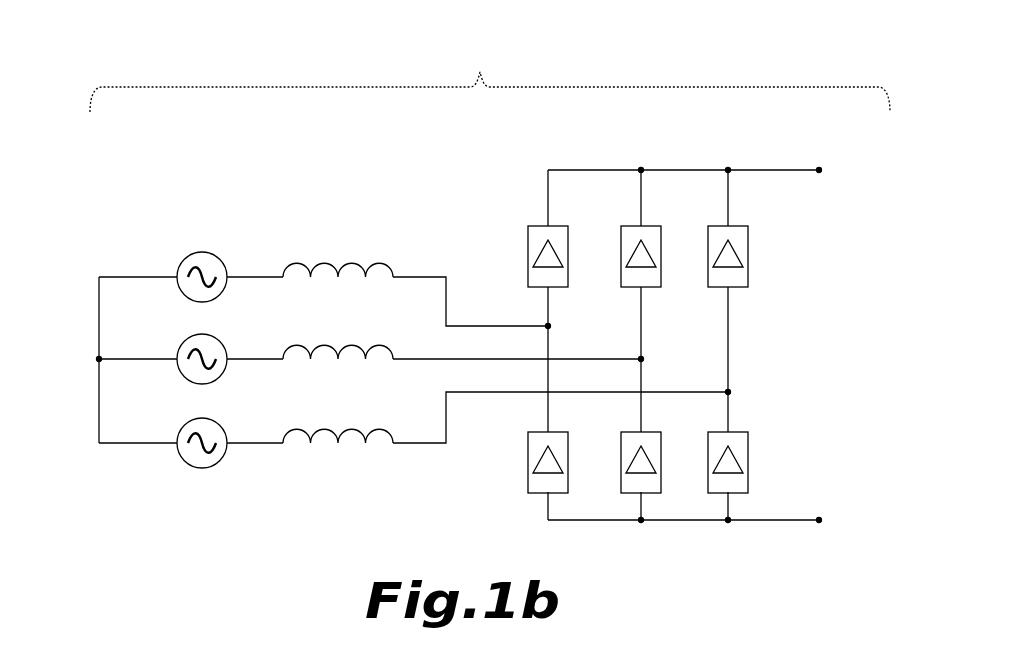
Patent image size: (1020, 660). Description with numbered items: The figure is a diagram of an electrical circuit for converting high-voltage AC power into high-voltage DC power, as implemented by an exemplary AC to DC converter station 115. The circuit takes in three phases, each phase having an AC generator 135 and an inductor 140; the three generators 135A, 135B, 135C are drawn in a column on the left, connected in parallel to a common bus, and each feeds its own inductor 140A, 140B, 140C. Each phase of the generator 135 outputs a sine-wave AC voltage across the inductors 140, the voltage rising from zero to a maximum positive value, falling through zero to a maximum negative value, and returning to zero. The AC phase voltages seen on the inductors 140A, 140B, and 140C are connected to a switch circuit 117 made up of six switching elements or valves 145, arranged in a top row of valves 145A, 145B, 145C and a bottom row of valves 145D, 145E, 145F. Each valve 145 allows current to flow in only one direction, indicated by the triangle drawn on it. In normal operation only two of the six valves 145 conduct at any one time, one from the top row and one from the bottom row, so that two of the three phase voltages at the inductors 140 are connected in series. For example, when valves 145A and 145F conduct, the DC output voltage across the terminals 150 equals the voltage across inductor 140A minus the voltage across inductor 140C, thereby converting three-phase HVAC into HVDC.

The AC to DC converter station 115 is at (481, 63).
The switch circuit 117 is at (648, 311).
The AC generator 135 is at (190, 321).
The AC generator 135A is at (185, 259).
The AC generator 135B is at (185, 341).
The AC generator 135C is at (185, 425).
The inductor 140 is at (320, 308).
The inductor 140A is at (305, 262).
The inductor 140B is at (305, 344).
The inductor 140C is at (305, 428).
The valve 145 is at (648, 341).
The valve 145A is at (528, 244).
The valve 145B is at (621, 244).
The valve 145C is at (708, 244).
The valve 145D is at (528, 450).
The valve 145E is at (621, 450).
The valve 145F is at (708, 450).
The terminals 150 is at (822, 172).